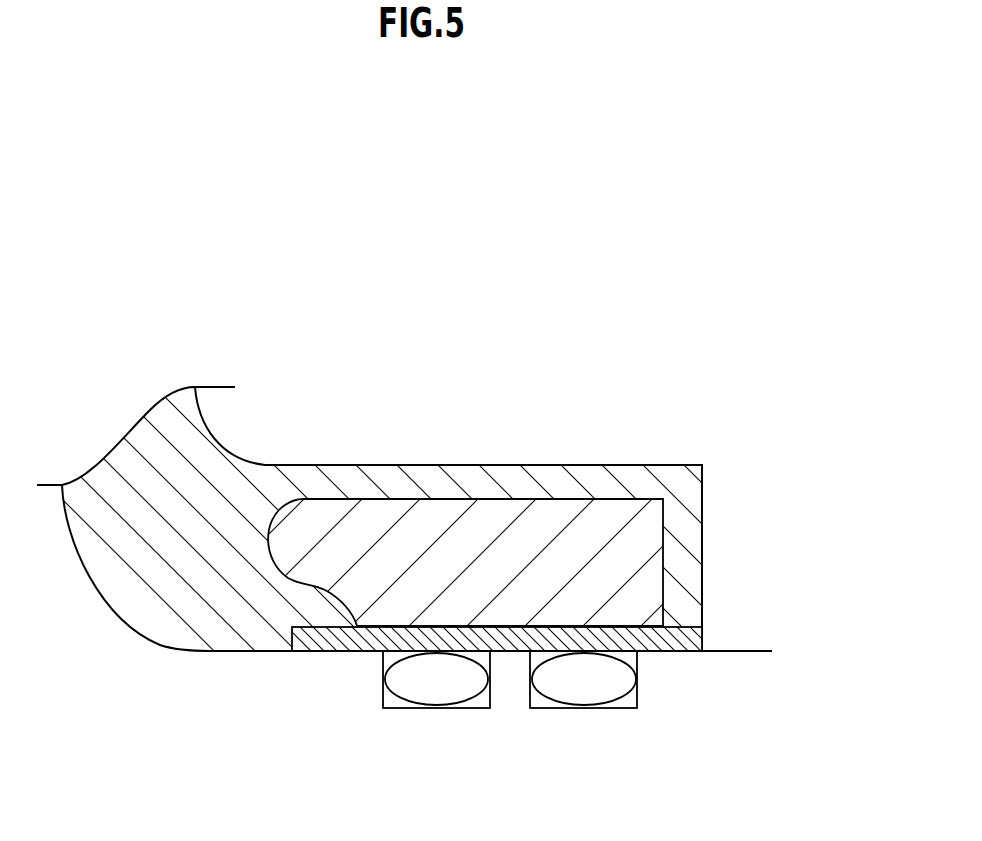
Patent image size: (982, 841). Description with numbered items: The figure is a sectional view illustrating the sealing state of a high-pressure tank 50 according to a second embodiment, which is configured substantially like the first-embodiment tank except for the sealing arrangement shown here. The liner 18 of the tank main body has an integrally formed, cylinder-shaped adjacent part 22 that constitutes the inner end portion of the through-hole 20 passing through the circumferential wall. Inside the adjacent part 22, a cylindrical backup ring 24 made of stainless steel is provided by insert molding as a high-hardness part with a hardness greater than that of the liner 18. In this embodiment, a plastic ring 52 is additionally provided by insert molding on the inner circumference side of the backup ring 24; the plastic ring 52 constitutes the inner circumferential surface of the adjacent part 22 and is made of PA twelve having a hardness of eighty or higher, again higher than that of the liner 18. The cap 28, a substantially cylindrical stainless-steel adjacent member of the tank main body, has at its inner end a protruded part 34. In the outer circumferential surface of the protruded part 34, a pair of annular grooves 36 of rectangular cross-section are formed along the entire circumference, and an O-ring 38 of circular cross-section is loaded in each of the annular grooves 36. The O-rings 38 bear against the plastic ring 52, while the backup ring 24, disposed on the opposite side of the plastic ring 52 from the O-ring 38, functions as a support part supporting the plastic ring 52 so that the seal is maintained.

The high-pressure tank 50 is at (417, 273).
The adjacent part 22 is at (480, 518).
The liner 18 is at (706, 463).
The backup ring 24 is at (470, 542).
The through-hole 20 is at (680, 653).
The protruded part 34 is at (571, 625).
The cap 28 is at (753, 647).
The O-ring 38 is at (410, 695).
The annular grooves 36 is at (427, 702).
The plastic ring 52 is at (507, 652).